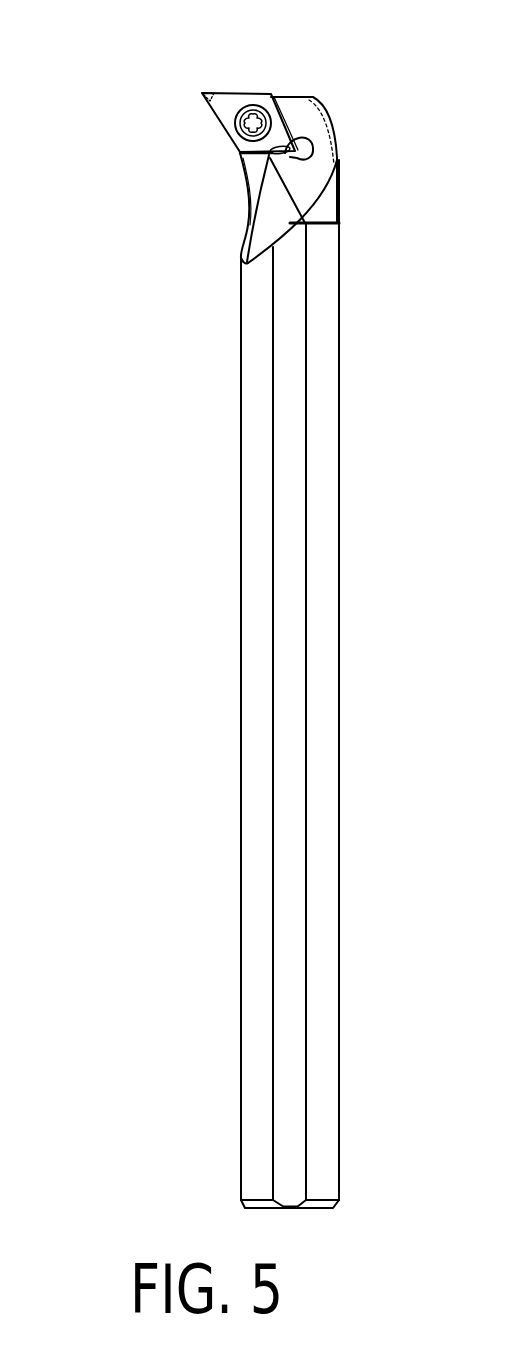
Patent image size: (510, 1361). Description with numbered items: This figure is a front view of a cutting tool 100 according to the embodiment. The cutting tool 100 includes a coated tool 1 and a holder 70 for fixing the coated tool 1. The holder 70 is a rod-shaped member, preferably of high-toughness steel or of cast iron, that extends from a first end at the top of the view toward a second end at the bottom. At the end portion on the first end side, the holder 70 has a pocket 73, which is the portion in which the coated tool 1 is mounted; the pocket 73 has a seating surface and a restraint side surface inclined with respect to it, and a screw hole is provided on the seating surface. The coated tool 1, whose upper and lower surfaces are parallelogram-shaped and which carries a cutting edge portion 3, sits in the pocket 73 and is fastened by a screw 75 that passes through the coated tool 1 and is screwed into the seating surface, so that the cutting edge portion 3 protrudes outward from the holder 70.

The cutting tool 100 is at (110, 47).
The holder 70 is at (224, 443).
The pocket 73 is at (248, 197).
The coated tool 1 is at (228, 118).
The cutting edge portion 3 is at (209, 93).
The screw 75 is at (263, 120).